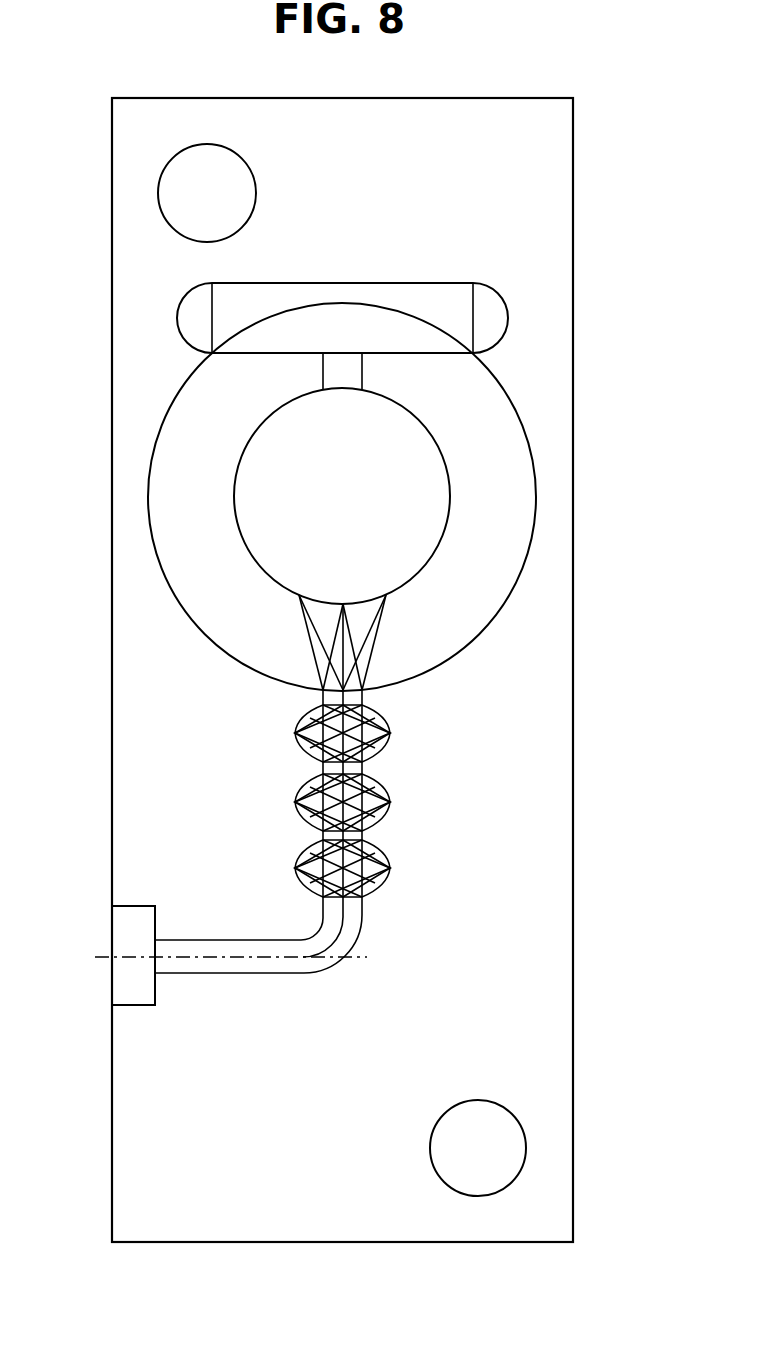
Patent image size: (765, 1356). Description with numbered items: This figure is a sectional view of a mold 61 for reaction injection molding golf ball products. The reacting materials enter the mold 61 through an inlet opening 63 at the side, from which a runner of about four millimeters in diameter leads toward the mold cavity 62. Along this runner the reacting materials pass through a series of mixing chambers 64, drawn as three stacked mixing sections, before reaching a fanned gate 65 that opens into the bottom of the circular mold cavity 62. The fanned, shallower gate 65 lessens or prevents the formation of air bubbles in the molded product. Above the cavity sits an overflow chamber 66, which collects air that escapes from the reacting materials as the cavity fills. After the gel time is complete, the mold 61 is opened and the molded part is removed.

The mold 61 is at (573, 170).
The mold cavity 62 is at (422, 481).
The inlet opening 63 is at (122, 930).
The mixing chambers 64 is at (390, 735).
The fanned gate 65 is at (375, 642).
The overflow chamber 66 is at (403, 283).